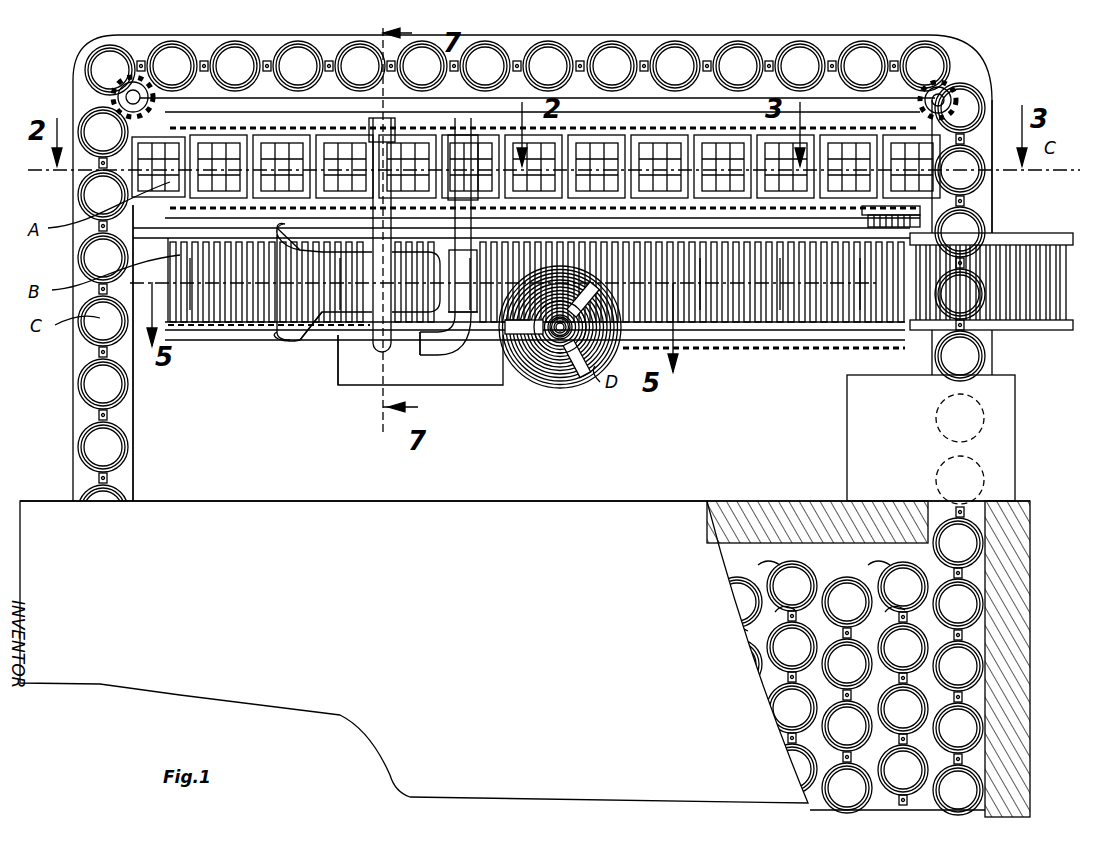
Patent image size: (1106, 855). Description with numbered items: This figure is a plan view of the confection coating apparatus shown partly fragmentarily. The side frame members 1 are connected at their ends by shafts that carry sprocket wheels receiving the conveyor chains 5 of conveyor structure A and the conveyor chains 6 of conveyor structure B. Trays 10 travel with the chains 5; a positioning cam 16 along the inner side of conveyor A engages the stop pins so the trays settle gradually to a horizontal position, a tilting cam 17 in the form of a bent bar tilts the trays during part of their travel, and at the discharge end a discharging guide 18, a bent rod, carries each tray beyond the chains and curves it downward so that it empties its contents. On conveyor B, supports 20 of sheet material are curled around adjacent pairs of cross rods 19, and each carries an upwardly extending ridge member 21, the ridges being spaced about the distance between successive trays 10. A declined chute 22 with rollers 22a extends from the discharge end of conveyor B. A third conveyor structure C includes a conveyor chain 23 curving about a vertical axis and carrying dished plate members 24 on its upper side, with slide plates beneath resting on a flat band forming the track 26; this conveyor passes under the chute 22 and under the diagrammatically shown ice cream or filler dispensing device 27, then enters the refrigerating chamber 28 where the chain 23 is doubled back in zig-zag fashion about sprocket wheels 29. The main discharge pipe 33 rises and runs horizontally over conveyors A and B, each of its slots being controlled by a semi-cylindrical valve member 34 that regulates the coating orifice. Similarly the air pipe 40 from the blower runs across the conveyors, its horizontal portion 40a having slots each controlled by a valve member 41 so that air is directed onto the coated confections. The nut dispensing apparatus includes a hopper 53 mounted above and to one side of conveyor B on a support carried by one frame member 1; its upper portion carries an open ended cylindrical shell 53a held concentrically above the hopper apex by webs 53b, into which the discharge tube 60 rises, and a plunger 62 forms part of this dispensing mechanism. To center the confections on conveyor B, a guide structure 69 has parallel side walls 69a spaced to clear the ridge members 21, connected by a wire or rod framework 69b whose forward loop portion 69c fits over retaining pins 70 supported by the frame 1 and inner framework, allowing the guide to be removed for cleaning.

The frame members 1 is at (257, 128).
The conveyor chains 5 is at (252, 128).
The conveyor chains 6 is at (212, 290).
The trays 10 is at (700, 143).
The positioning cam 16 is at (170, 210).
The tilting cam 17 is at (540, 212).
The discharging guide 18 is at (935, 214).
The cross rods 19 is at (760, 270).
The supports 20 is at (836, 298).
The ridge members 21 is at (788, 298).
The chute member 22 is at (1012, 246).
The rollers 22a is at (1034, 310).
The conveyor chain 23 is at (962, 138).
The plate members 24 is at (945, 68).
The track 26 is at (82, 440).
The ice cream or filler dispensing device 27 is at (931, 439).
The refrigerating chamber 28 is at (768, 472).
The sprocket wheels 29 is at (867, 608).
The main discharge pipe 33 is at (356, 252).
The valve member 34 is at (383, 165).
The air pipe 40 is at (422, 352).
The horizontal portion of the air pipe 40a is at (452, 340).
The valve member 41 is at (462, 150).
The hopper 53 is at (560, 366).
The cylindrical shell 53a is at (545, 362).
The webs 53b is at (522, 330).
The discharge tube 60 is at (565, 338).
The plunger 62 is at (568, 352).
The guide structure 69 is at (346, 312).
The side walls 69a is at (330, 330).
The wire or rod framework 69b is at (300, 302).
The loop portion 69c is at (265, 250).
The retaining pins 70 is at (278, 240).